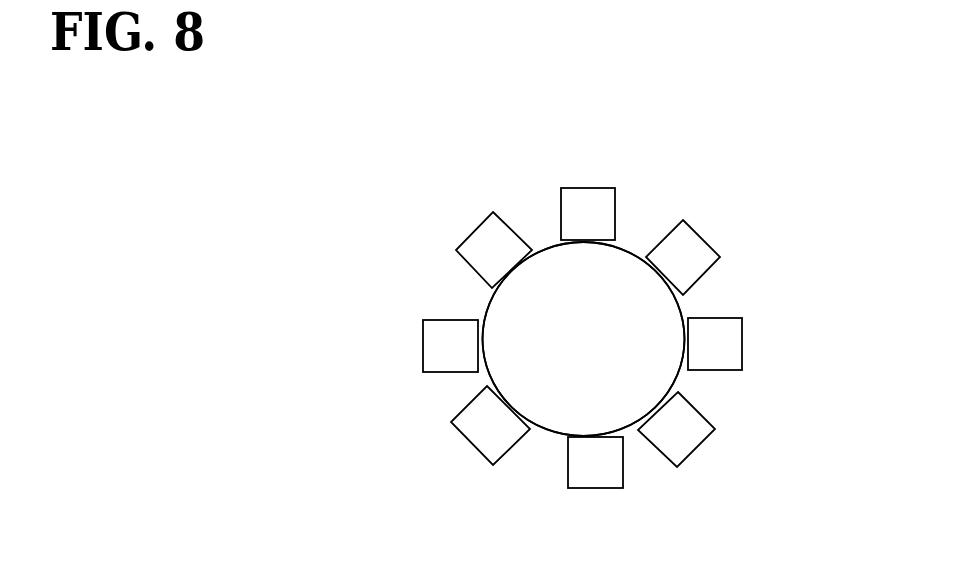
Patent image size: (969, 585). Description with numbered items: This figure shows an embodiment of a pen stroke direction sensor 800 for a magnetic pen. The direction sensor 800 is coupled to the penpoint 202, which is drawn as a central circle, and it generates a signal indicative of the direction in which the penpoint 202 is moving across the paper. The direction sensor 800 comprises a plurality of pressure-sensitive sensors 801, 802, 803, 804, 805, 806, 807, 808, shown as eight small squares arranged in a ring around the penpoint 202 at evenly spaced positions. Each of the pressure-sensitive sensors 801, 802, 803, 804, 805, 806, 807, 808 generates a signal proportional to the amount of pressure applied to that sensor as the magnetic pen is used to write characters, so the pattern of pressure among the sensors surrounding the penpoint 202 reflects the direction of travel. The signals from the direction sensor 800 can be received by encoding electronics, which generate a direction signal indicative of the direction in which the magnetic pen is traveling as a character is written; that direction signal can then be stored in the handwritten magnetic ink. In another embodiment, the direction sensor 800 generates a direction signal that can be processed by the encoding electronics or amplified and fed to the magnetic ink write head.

The direction sensor 800 is at (503, 79).
The penpoint 202 is at (490, 301).
The pressure-sensitive sensor 801 is at (600, 182).
The pressure-sensitive sensor 802 is at (707, 230).
The pressure-sensitive sensor 803 is at (752, 343).
The pressure-sensitive sensor 804 is at (692, 457).
The pressure-sensitive sensor 805 is at (583, 494).
The pressure-sensitive sensor 806 is at (474, 455).
The pressure-sensitive sensor 807 is at (417, 360).
The pressure-sensitive sensor 808 is at (477, 222).